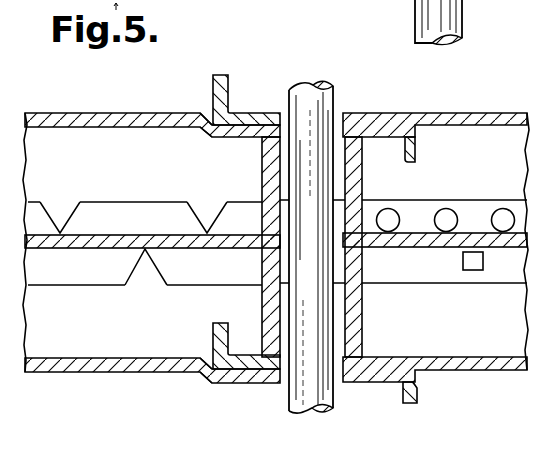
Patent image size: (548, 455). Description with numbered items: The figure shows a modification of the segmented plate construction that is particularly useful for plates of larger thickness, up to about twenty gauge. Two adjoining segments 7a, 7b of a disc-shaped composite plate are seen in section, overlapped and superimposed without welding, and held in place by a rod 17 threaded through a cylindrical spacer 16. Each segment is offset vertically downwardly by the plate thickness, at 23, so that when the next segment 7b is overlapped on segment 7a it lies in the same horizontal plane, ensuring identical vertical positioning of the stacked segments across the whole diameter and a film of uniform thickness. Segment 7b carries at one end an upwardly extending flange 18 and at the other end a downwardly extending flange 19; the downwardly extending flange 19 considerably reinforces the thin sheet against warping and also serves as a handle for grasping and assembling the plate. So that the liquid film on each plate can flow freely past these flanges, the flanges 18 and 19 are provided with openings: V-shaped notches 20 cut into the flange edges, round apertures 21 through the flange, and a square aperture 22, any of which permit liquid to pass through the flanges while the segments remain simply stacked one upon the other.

The segment 7a is at (62, 113).
The segment 7b is at (455, 113).
The cylindrical spacer 16 is at (362, 192).
The rod 17 is at (289, 95).
The upwardly extending flange 18 is at (213, 93).
The downwardly extending flange 19 is at (417, 146).
The notch 20 is at (57, 228).
The aperture 21 is at (500, 208).
The aperture 22 is at (473, 270).
The offset 23 is at (205, 136).